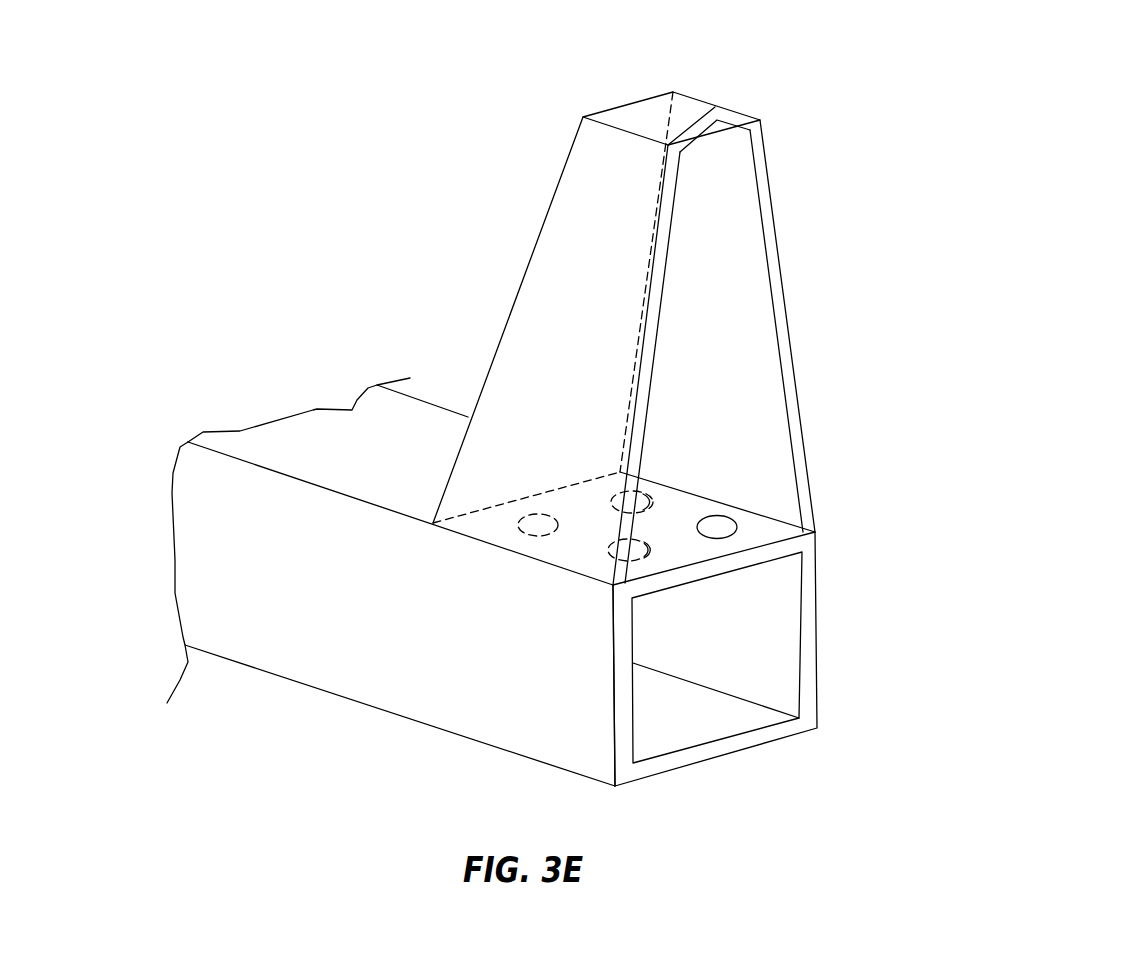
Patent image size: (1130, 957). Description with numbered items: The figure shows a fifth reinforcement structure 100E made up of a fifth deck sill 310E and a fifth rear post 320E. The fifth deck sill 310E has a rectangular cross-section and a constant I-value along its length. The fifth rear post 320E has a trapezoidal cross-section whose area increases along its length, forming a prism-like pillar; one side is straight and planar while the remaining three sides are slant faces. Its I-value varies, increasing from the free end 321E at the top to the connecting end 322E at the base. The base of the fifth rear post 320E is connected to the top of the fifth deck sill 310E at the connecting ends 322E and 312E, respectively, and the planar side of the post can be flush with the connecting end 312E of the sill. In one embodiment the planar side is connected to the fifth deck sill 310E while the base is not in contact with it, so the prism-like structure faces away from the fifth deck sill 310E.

The fifth reinforcement structure 100E is at (1015, 120).
The fifth deck sill 310E is at (298, 653).
The connecting end of the fifth deck sill 312E is at (557, 697).
The fifth rear post 320E is at (784, 310).
The free end of the fifth rear post 321E is at (766, 150).
The connecting end of the fifth rear post 322E is at (808, 518).